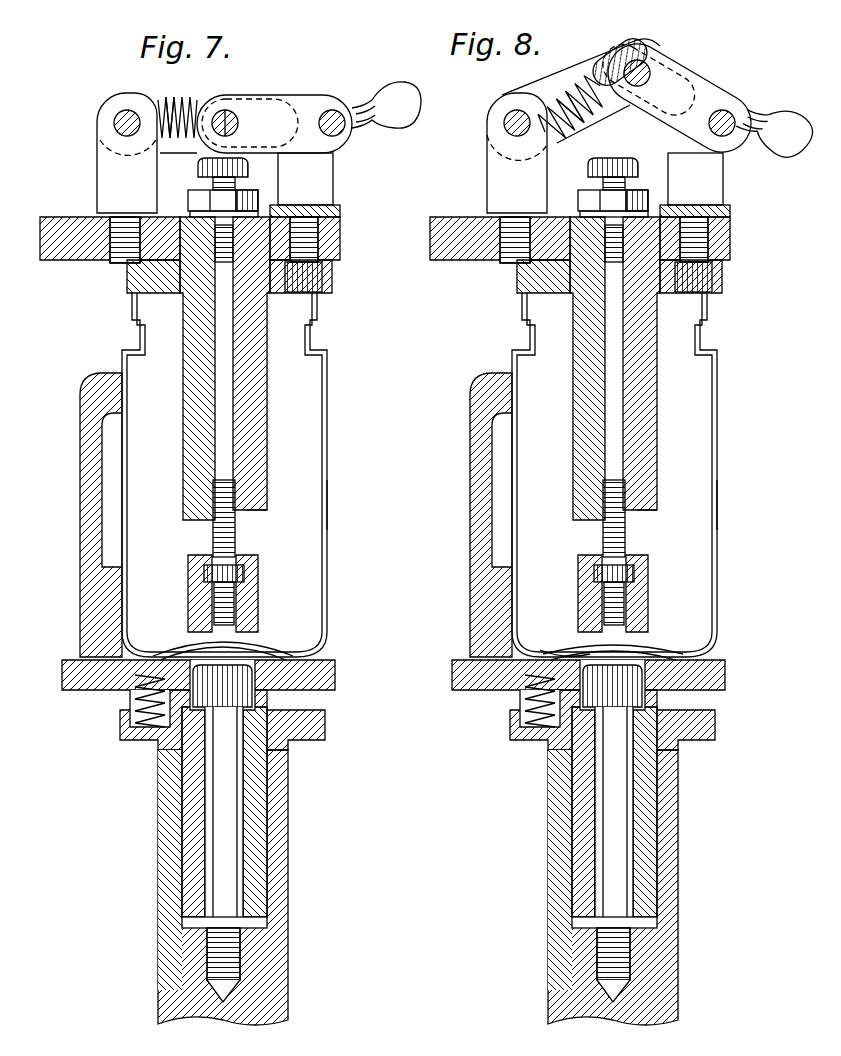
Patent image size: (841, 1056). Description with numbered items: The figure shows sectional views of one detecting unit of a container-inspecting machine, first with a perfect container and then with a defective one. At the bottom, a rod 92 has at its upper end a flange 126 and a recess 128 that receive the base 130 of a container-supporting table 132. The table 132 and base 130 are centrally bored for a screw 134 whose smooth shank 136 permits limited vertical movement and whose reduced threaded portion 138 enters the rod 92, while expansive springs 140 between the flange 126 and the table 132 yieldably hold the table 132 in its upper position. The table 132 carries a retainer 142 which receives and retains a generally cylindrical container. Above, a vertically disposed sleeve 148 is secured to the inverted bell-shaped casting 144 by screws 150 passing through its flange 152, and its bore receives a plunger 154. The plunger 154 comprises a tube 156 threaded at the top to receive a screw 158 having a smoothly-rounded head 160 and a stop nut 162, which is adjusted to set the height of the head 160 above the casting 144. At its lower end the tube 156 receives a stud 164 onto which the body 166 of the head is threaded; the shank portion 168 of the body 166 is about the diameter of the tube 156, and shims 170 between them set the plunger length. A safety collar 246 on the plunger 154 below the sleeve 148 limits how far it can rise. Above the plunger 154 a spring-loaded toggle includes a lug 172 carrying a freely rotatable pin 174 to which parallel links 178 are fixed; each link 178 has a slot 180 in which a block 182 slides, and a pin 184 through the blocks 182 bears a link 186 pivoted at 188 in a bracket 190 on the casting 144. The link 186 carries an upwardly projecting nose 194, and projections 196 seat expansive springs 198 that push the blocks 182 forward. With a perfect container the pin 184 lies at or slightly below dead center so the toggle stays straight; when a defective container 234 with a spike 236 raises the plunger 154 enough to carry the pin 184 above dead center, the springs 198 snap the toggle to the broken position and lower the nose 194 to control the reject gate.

In FIG. 7, the rod 92 is at (280, 975).
In FIG. 8, the rod 92 is at (639, 887).
In FIG. 7, the flange 126 is at (305, 735).
In FIG. 8, the flange 126 is at (633, 737).
In FIG. 7, the recess 128 is at (262, 925).
In FIG. 8, the recess 128 is at (657, 917).
In FIG. 7, the base 130 is at (262, 885).
In FIG. 8, the base 130 is at (657, 812).
In FIG. 7, the container-supporting table 132 is at (322, 680).
In FIG. 8, the container-supporting table 132 is at (614, 677).
In FIG. 7, the screw 134 is at (210, 700).
In FIG. 8, the screw 134 is at (570, 720).
In FIG. 7, the smooth shank 136 is at (222, 862).
In FIG. 8, the smooth shank 136 is at (557, 817).
In FIG. 7, the reduced threaded portion 138 is at (212, 958).
In FIG. 8, the reduced threaded portion 138 is at (556, 965).
In FIG. 7, the expansive springs 140 is at (133, 695).
In FIG. 8, the expansive springs 140 is at (502, 701).
In FIG. 7, the retainer 142 is at (92, 585).
In FIG. 8, the retainer 142 is at (466, 515).
In FIG. 7, the inverted bell-shaped casting 144 is at (78, 243).
In FIG. 8, the inverted bell-shaped casting 144 is at (575, 252).
In FIG. 7, the sleeve 148 is at (268, 455).
In FIG. 8, the sleeve 148 is at (617, 437).
In FIG. 7, the screws 150 is at (310, 236).
In FIG. 8, the screws 150 is at (726, 239).
In FIG. 7, the flange 152 is at (322, 275).
In FIG. 8, the flange 152 is at (723, 274).
In FIG. 7, the plunger 154 is at (255, 525).
In FIG. 8, the plunger 154 is at (667, 520).
In FIG. 7, the tube 156 is at (205, 452).
In FIG. 8, the tube 156 is at (567, 368).
In FIG. 7, the screw 158 is at (222, 255).
In FIG. 8, the screw 158 is at (547, 259).
In FIG. 7, the head 160 is at (252, 170).
In FIG. 8, the head 160 is at (636, 167).
In FIG. 7, the stop nut 162 is at (193, 200).
In FIG. 8, the stop nut 162 is at (598, 188).
In FIG. 7, the stud 164 is at (236, 553).
In FIG. 8, the stud 164 is at (647, 520).
In FIG. 7, the body 166 is at (258, 647).
In FIG. 8, the body 166 is at (623, 639).
In FIG. 7, the shank portion 168 is at (246, 613).
In FIG. 8, the shank portion 168 is at (653, 603).
In FIG. 7, the shims 170 is at (208, 578).
In FIG. 8, the shims 170 is at (588, 593).
In FIG. 7, the lug 172 is at (105, 184).
In FIG. 8, the lug 172 is at (496, 153).
In FIG. 7, the pin 174 is at (114, 125).
In FIG. 8, the pin 174 is at (492, 131).
In FIG. 7, the links 178 is at (162, 158).
In FIG. 8, the links 178 is at (637, 42).
In FIG. 7, the slot 180 is at (262, 110).
In FIG. 8, the slot 180 is at (597, 87).
In FIG. 7, the block 182 is at (225, 110).
In FIG. 7, the pin 184 is at (238, 112).
In FIG. 8, the pin 184 is at (650, 73).
In FIG. 7, the link 186 is at (342, 100).
In FIG. 8, the link 186 is at (700, 95).
In FIG. 7, the pivot 188 is at (342, 133).
In FIG. 8, the pivot 188 is at (728, 138).
In FIG. 7, the bracket 190 is at (315, 186).
In FIG. 8, the bracket 190 is at (716, 185).
In FIG. 7, the nose 194 is at (400, 120).
In FIG. 8, the nose 194 is at (800, 152).
In FIG. 7, the projection 196 is at (205, 118).
In FIG. 8, the projection 196 is at (560, 125).
In FIG. 7, the expansive springs 198 is at (165, 110).
In FIG. 8, the expansive springs 198 is at (582, 110).
In FIG. 7, the container 234 is at (327, 505).
In FIG. 8, the container 234 is at (739, 505).
In FIG. 8, the spike 236 is at (502, 650).
In FIG. 7, the safety collar 246 is at (258, 580).
In FIG. 8, the safety collar 246 is at (644, 576).